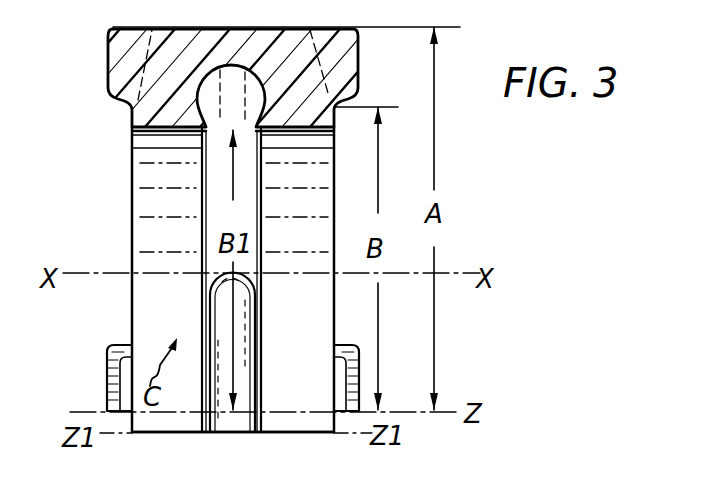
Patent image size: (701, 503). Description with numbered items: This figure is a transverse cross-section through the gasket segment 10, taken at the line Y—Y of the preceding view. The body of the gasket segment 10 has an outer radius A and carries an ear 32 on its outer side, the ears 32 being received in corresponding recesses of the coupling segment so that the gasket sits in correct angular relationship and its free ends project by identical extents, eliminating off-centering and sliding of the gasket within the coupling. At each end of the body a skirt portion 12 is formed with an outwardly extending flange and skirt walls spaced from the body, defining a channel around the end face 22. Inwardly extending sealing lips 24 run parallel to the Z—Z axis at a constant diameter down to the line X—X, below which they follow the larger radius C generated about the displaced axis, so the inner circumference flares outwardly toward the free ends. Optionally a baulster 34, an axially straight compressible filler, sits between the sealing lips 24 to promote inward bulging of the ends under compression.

The gasket segment 10 is at (132, 185).
The skirt portion 12 is at (353, 347).
The end face 22 is at (170, 427).
The sealing lips 24 is at (181, 305).
The ears 32 is at (101, 78).
The baulster 34 is at (230, 425).